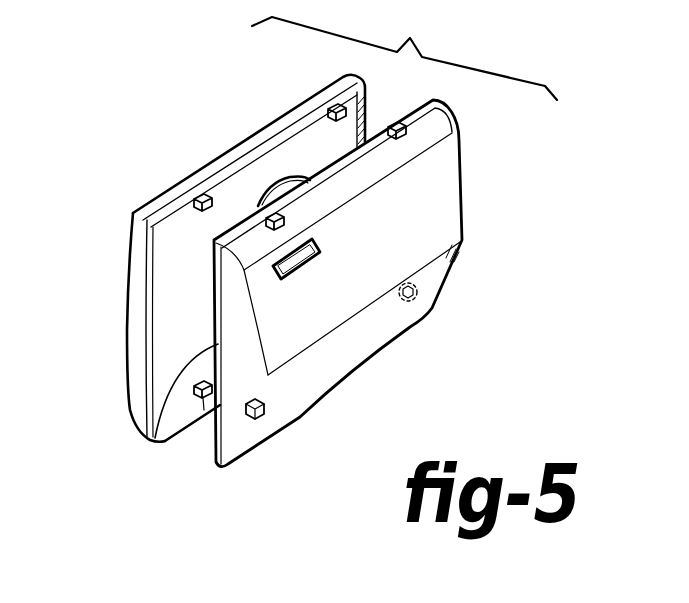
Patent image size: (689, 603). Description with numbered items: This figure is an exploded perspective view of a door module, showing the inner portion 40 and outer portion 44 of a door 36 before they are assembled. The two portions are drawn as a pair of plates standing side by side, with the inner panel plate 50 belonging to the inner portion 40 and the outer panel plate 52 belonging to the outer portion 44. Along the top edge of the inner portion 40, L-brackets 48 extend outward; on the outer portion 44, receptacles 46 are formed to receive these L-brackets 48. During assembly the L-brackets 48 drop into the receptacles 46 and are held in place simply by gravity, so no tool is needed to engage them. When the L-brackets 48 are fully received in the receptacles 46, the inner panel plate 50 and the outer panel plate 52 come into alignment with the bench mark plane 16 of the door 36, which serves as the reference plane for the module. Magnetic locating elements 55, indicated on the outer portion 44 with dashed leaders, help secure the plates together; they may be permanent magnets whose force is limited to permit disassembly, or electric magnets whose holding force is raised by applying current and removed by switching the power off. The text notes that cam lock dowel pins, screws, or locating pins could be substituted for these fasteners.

The bench mark plane 16 is at (193, 305).
The door 36 is at (458, 273).
The inner portion 40 is at (135, 302).
The outer portion 44 is at (241, 326).
The receptacles 46 is at (302, 171).
The L-brackets 48 is at (329, 106).
The inner panel plate 50 is at (155, 390).
The outer panel plate 52 is at (150, 438).
The magnetic locating elements 55 is at (420, 300).